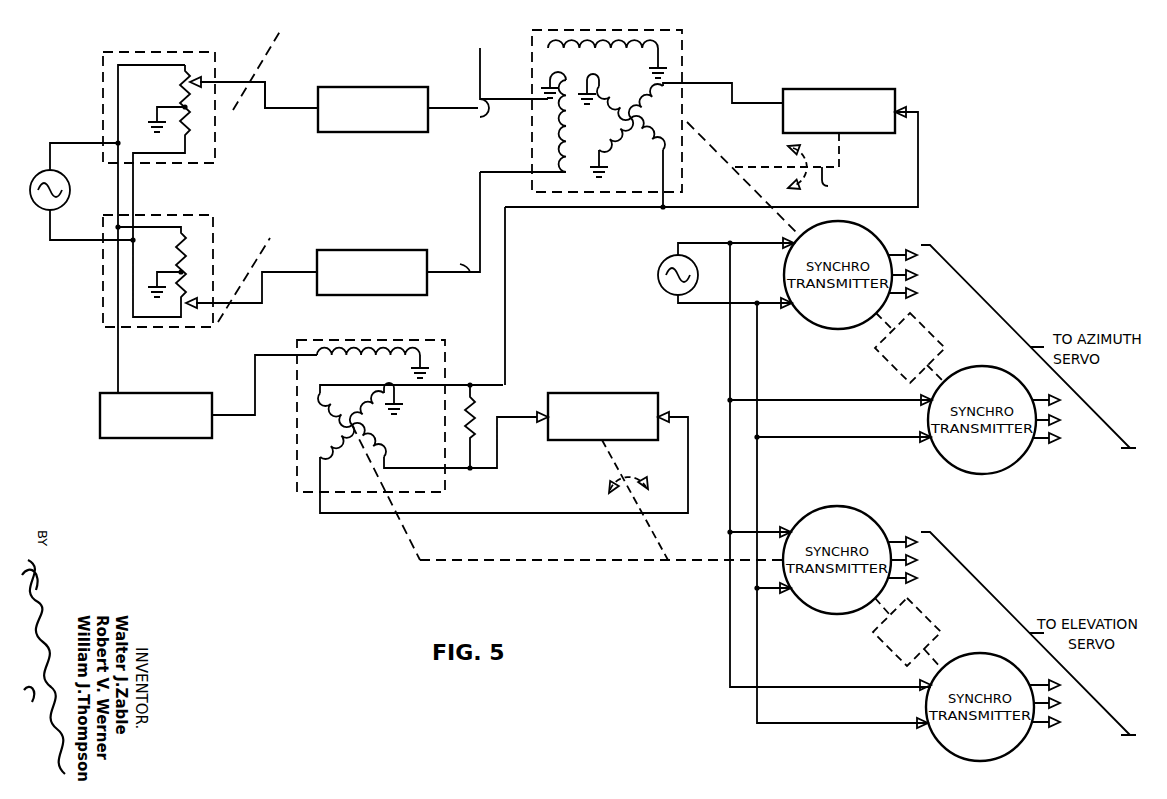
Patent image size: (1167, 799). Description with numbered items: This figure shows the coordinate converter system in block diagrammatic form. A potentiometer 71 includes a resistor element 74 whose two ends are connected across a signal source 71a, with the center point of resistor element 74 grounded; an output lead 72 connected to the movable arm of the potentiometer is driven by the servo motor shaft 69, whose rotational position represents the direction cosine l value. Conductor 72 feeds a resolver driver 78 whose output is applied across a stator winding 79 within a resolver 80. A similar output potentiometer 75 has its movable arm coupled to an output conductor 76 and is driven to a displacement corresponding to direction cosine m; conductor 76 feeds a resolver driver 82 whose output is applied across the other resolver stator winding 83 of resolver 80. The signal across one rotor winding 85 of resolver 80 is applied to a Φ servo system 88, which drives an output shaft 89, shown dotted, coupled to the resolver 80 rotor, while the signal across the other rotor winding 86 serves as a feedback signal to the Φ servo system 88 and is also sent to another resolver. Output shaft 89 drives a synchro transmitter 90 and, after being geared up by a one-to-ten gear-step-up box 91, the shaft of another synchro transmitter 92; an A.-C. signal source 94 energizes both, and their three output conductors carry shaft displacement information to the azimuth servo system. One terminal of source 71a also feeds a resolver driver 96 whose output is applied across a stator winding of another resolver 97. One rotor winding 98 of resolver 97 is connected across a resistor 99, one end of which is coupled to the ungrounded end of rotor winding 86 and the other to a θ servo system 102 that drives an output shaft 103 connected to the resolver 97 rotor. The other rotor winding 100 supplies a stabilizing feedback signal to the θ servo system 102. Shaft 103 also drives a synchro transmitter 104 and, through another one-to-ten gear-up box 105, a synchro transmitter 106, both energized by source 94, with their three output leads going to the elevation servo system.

The servo motor shaft 69 is at (270, 65).
The potentiometer 71 is at (103, 90).
The signal source 71a is at (69, 183).
The output lead 72 is at (267, 103).
The resistor element 74 is at (178, 96).
The output potentiometer 75 is at (103, 244).
The output conductor 76 is at (262, 290).
The resolver driver 78 is at (392, 84).
The stator winding 79 is at (630, 52).
The resolver 80 is at (594, 34).
The resolver driver 82 is at (387, 250).
The resolver stator winding 83 is at (565, 148).
The rotor winding 85 is at (648, 120).
The rotor winding 86 is at (653, 154).
The Φ servo system 88 is at (845, 88).
The output shaft 89 is at (770, 170).
The synchro transmitter 90 is at (880, 239).
The gear-step-up box 91 is at (928, 334).
The synchro transmitter 92 is at (944, 459).
The A.-C. signal source 94 is at (665, 264).
The resolver driver 96 is at (184, 394).
The resolver 97 is at (381, 340).
The rotor winding 98 is at (330, 416).
The resistor 99 is at (482, 416).
The rotor winding 100 is at (321, 461).
The θ servo system 102 is at (635, 391).
The output shaft 103 is at (667, 550).
The synchro transmitter 104 is at (856, 511).
The gear-up box 105 is at (930, 621).
The synchro transmitter 106 is at (968, 653).